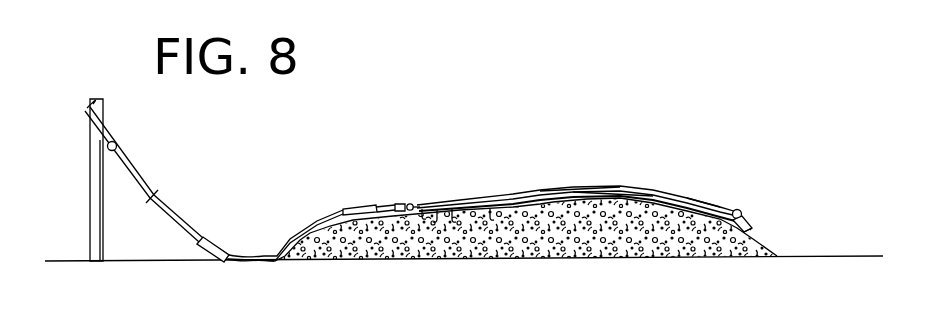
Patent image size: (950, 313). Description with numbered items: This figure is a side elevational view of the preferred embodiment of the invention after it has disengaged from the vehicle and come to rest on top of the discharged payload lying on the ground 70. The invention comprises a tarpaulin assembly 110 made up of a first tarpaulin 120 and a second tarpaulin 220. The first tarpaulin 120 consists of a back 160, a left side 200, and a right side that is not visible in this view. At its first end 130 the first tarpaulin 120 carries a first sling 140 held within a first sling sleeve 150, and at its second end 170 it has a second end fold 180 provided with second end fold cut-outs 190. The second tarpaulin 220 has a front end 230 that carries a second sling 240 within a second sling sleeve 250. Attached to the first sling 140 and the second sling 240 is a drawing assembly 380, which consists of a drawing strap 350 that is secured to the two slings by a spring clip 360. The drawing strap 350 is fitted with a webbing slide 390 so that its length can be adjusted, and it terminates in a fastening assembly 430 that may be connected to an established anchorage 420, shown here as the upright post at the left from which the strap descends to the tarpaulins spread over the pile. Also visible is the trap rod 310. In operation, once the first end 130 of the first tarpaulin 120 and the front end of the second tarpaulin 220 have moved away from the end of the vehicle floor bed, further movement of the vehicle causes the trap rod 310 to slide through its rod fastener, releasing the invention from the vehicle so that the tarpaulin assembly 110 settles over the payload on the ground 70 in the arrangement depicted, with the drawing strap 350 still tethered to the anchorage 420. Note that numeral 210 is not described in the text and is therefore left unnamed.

The ground 70 is at (830, 255).
The tarpaulin assembly 110 is at (643, 186).
The first tarpaulin 120 is at (687, 193).
The first end 130 is at (450, 199).
The first sling 140 is at (378, 208).
The first sling sleeve 150 is at (437, 209).
The back 160 is at (452, 210).
The second end 170 is at (737, 209).
The second end fold 180 is at (740, 215).
The second end fold cut-outs 190 is at (742, 212).
The left side 200 is at (577, 188).
The cover layer 210 is at (598, 190).
The second tarpaulin 220 is at (744, 218).
The front end 230 is at (498, 212).
The second sling 240 is at (468, 214).
The second sling sleeve 250 is at (422, 206).
The trap rod 310 is at (717, 201).
The drawing strap 350 is at (214, 179).
The spring clip 360 is at (360, 206).
The drawing assembly 380 is at (278, 240).
The webbing slide 390 is at (213, 246).
The established anchorage 420 is at (90, 196).
The fastening assembly 430 is at (112, 142).